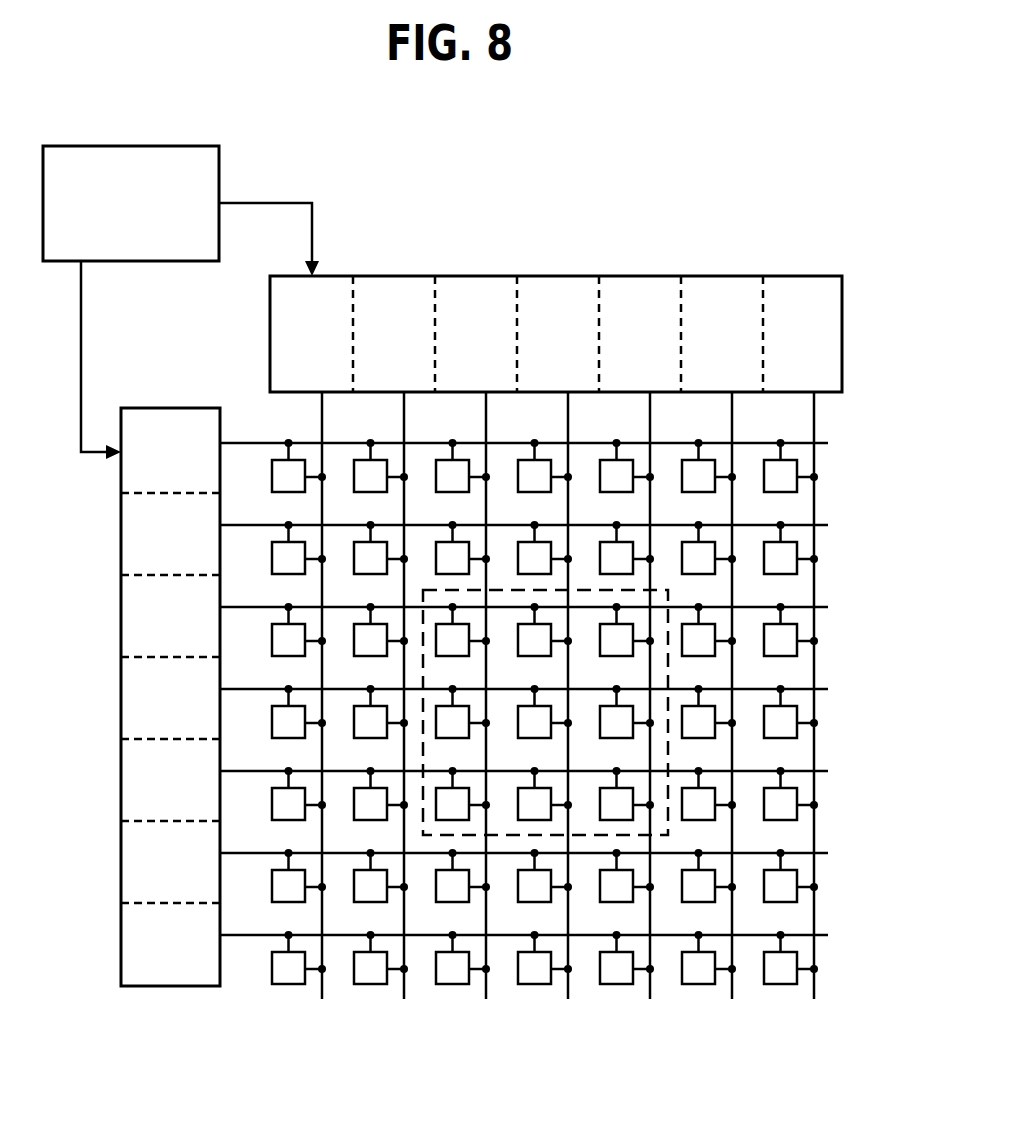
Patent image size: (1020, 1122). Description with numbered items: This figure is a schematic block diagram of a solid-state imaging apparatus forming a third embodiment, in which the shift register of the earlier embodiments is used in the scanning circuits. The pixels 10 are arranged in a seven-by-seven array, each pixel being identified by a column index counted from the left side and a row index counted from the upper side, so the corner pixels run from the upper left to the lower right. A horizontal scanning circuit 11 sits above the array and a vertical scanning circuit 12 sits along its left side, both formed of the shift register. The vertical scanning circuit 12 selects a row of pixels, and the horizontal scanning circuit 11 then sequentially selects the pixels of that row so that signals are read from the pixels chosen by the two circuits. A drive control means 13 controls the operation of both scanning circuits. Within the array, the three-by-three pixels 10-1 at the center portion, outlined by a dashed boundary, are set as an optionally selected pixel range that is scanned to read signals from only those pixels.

The drive control means 13 is at (131, 145).
The vertical scanning circuit 12 is at (142, 408).
The horizontal scanning circuit 11 is at (478, 276).
The pixels 10 is at (559, 712).
The pixels to be read out 10-1 is at (432, 838).